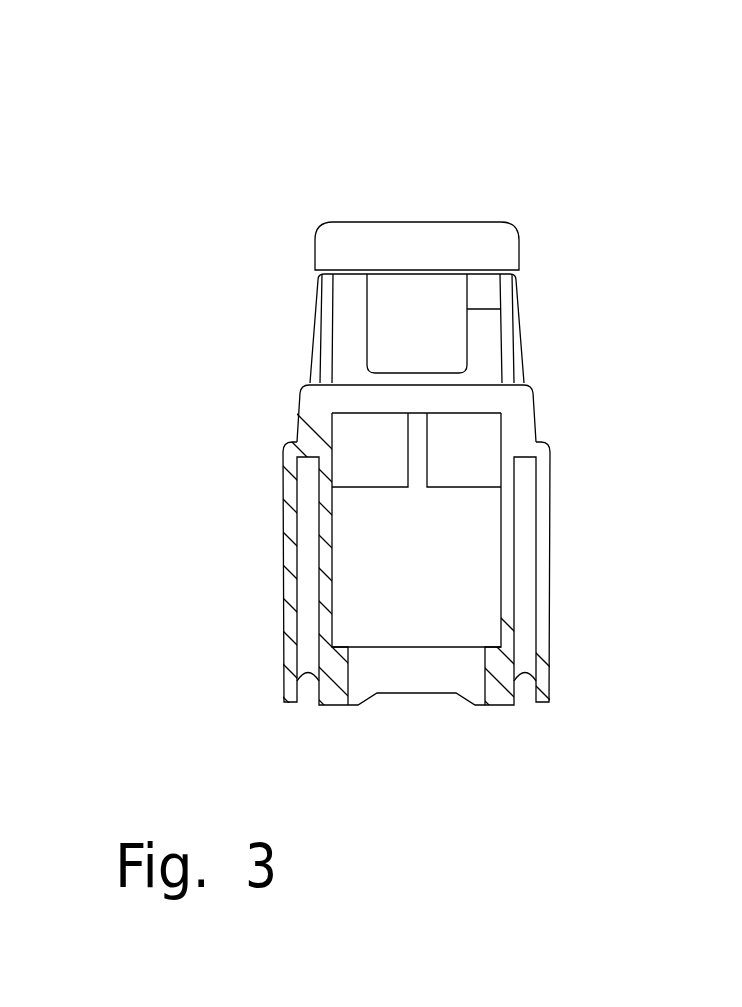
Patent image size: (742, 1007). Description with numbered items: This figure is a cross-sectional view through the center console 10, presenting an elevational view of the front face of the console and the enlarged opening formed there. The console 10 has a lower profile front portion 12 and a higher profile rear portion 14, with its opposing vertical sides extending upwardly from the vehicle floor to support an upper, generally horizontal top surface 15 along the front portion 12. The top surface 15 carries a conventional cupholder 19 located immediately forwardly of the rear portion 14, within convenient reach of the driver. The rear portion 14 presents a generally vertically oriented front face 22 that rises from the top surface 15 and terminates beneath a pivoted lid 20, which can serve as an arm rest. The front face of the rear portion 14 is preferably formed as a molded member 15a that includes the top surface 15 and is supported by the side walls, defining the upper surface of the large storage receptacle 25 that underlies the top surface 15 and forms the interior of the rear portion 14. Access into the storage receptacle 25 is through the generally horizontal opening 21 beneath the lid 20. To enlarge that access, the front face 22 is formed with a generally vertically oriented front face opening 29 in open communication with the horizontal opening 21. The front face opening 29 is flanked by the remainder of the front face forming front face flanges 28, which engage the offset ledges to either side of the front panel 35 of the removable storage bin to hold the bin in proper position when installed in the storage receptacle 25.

The center console 10 is at (253, 163).
The front portion 12 is at (575, 582).
The rear portion 14 is at (293, 270).
The top surface 15 is at (355, 387).
The molded member 15a is at (523, 427).
The cupholder 19 is at (442, 498).
The pivoted lid 20 is at (498, 252).
The horizontal opening 21 is at (373, 217).
The front face 22 is at (487, 370).
The storage receptacle 25 is at (375, 573).
The front face flanges 28 is at (347, 330).
The front face opening 29 is at (470, 310).
The front panel 35 is at (416, 305).